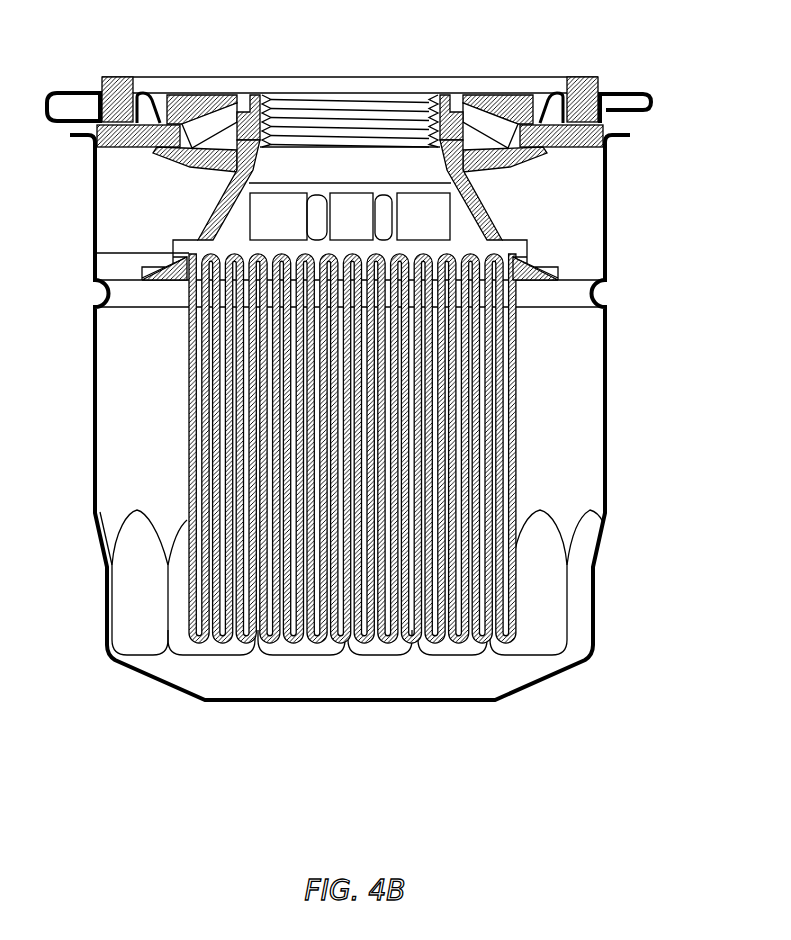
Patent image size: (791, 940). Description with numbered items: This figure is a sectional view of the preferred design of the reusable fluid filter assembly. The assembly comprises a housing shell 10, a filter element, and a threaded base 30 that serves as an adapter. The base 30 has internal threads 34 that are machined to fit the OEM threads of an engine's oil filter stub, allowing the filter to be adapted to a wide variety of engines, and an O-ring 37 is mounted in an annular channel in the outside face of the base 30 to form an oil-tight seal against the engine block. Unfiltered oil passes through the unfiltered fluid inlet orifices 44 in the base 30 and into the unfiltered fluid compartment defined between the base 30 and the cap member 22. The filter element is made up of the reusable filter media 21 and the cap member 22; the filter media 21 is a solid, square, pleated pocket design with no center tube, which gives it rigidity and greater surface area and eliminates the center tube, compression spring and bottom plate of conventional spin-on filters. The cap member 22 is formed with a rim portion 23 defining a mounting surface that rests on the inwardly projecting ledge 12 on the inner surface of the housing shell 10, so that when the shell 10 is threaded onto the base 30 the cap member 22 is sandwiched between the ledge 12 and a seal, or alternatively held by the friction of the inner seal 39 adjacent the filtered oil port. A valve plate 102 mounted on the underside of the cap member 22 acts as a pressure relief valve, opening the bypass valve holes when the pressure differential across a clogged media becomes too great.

The housing shell 10 is at (608, 355).
The ledge 12 is at (577, 294).
The filter media 21 is at (514, 438).
The cap member 22 is at (485, 212).
The rim portion 23 is at (550, 267).
The threaded base 30 is at (653, 106).
The internal threads 34 is at (373, 115).
The O-ring 37 is at (113, 80).
The inner seal 39 is at (248, 112).
The unfiltered fluid inlet orifices 44 is at (208, 117).
The valve plate 102 is at (423, 216).